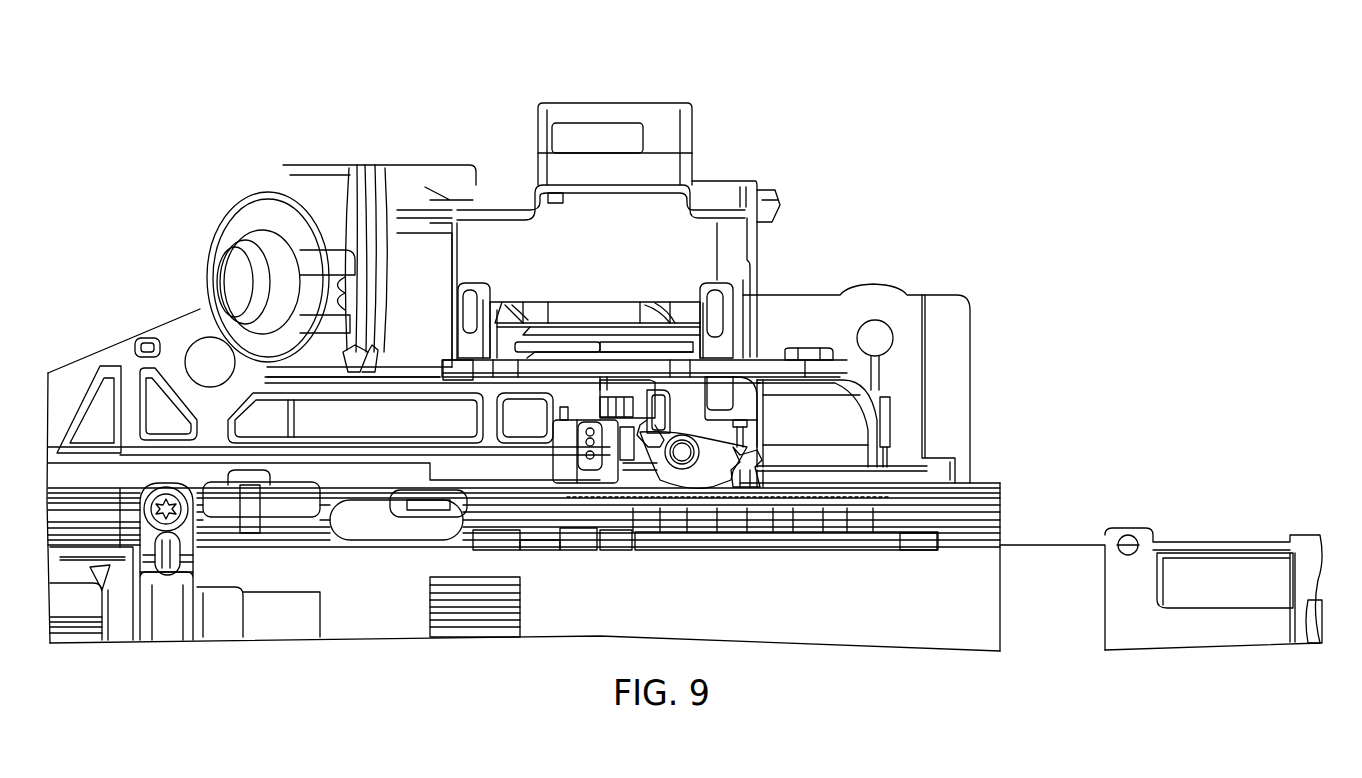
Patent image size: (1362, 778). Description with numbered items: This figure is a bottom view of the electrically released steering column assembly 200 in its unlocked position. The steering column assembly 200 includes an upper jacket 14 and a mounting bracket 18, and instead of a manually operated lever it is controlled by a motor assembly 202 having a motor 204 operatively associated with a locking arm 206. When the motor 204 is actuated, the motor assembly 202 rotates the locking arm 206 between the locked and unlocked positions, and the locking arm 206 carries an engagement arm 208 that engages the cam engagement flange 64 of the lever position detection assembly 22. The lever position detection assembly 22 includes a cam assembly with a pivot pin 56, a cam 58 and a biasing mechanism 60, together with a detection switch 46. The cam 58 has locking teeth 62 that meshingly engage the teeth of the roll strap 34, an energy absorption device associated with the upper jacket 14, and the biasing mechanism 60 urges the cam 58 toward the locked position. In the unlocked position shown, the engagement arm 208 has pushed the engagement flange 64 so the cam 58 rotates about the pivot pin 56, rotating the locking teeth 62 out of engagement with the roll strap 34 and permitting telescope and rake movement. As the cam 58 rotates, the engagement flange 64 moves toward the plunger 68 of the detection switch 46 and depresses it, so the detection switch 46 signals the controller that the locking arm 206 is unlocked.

The steering column assembly 200 is at (1055, 122).
The motor assembly 202 is at (379, 121).
The motor 204 is at (410, 263).
The locking arm 206 is at (685, 350).
The engagement arm 208 is at (633, 410).
The mounting bracket 18 is at (958, 395).
The upper jacket 14 is at (1058, 540).
The lever position detection assembly 22 is at (545, 463).
The roll strap 34 is at (377, 533).
The detection switch 46 is at (590, 467).
The plunger 68 is at (635, 455).
The biasing mechanism 60 is at (681, 455).
The pivot pin 56 is at (687, 467).
The cam 58 is at (723, 470).
The locking teeth 62 is at (747, 450).
The engagement flange 64 is at (643, 433).